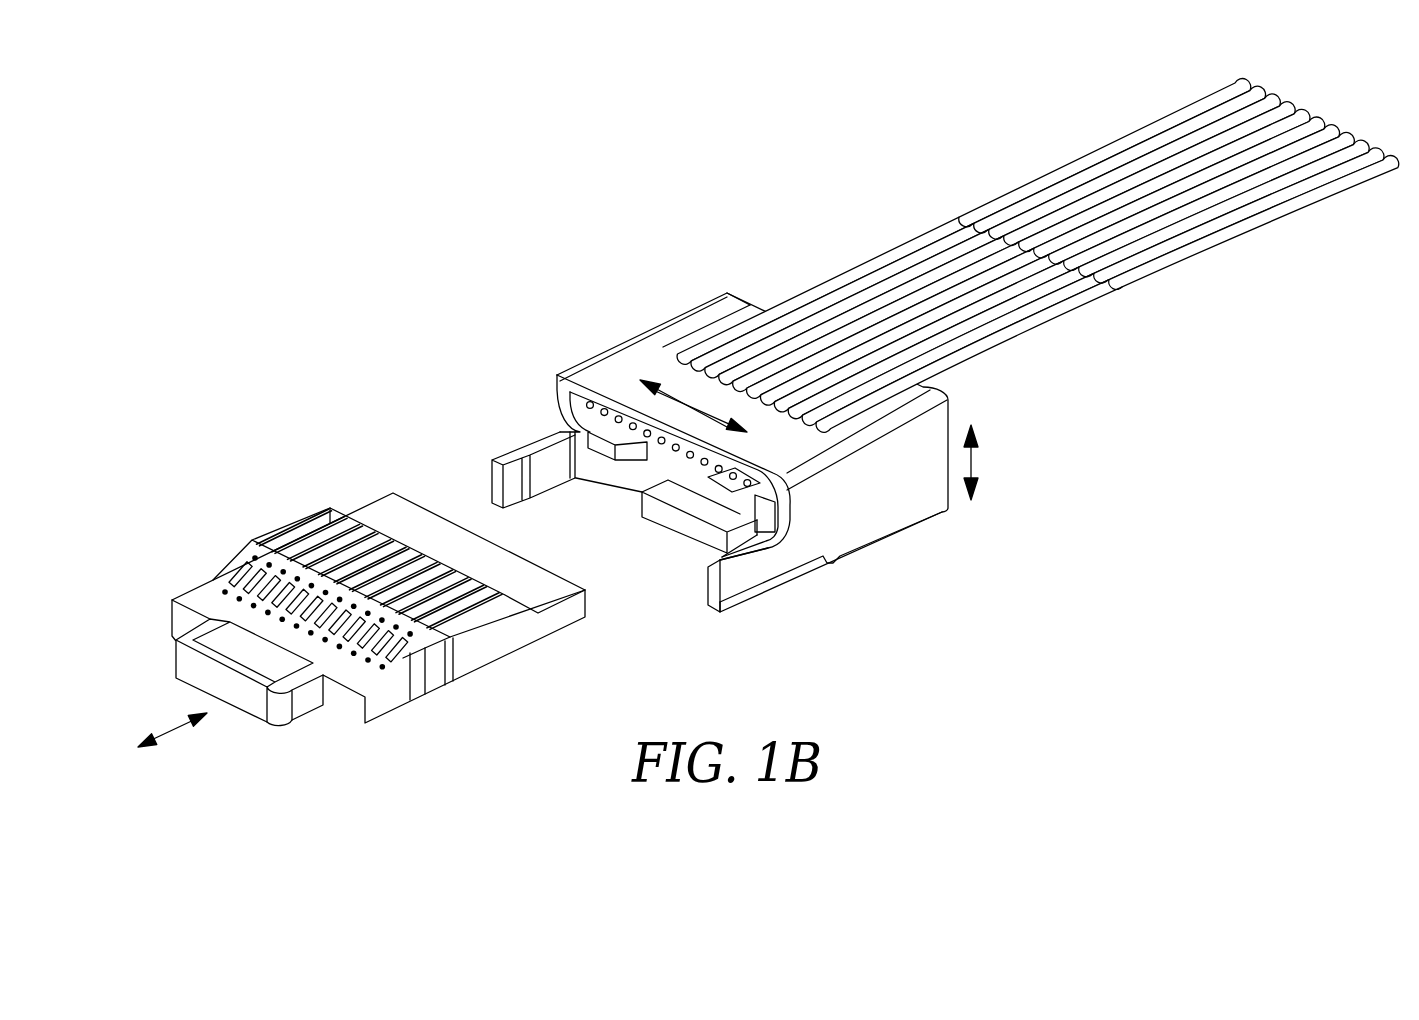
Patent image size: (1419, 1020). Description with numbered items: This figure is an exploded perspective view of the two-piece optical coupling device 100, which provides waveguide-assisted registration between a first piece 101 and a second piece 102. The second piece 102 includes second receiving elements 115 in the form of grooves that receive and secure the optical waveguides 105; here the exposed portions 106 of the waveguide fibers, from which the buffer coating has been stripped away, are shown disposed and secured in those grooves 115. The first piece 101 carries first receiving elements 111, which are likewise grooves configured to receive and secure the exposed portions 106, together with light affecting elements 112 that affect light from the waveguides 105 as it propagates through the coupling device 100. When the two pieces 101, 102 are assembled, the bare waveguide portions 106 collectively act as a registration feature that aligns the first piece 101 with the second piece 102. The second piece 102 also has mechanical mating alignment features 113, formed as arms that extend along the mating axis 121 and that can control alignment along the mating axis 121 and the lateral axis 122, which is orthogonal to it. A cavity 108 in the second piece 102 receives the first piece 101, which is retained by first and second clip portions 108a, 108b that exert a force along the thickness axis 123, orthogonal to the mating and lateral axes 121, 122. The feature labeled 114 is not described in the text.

The optical coupling device 100 is at (297, 343).
The first piece 101 is at (345, 614).
The second piece 102 is at (932, 374).
The optical waveguides 105 is at (815, 290).
The exposed portion of optical waveguide fiber 106 is at (678, 445).
The cavity 108 is at (740, 497).
The first clip portion 108a is at (770, 503).
The second clip portion 108b is at (655, 510).
The first receiving elements 111 is at (307, 528).
The light affecting elements 112 is at (227, 563).
The mechanical mating alignment features 113 is at (777, 567).
The alignment arm 114 is at (533, 445).
The second receiving elements 115 is at (676, 450).
The mating axis 121 is at (177, 730).
The lateral axis 122 is at (707, 413).
The thickness axis 123 is at (971, 460).